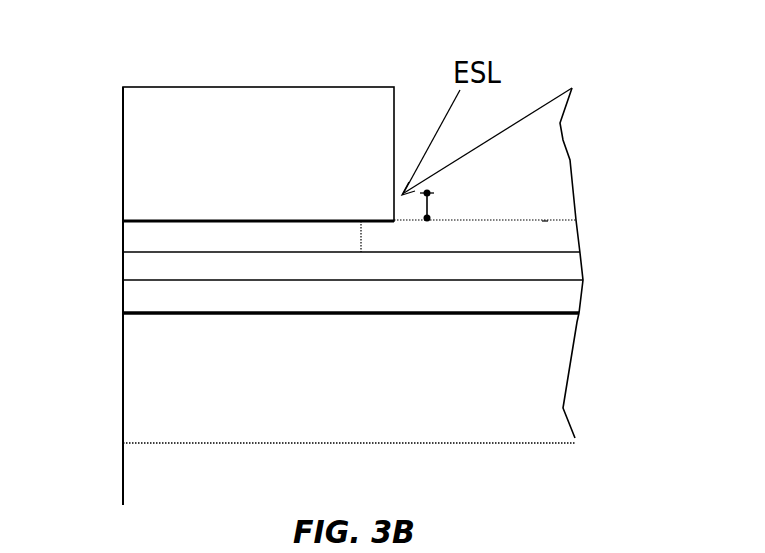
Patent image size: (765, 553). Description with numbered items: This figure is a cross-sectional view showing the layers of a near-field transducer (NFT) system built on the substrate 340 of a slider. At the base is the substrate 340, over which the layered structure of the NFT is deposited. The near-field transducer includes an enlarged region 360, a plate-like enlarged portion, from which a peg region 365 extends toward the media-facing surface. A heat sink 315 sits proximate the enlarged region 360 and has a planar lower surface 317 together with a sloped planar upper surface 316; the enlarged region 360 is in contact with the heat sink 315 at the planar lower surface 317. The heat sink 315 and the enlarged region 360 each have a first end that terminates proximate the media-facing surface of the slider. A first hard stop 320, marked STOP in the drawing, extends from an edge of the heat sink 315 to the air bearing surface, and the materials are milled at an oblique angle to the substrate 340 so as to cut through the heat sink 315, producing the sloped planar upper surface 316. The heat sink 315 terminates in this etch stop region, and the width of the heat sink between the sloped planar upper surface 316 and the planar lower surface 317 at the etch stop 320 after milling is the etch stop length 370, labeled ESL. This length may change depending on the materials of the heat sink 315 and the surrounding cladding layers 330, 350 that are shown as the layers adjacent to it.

The first hard stop 320 is at (199, 92).
The sloped planar upper surface 316 is at (527, 112).
The heat sink 315 is at (562, 163).
The enlarged region 360 is at (567, 242).
The planar lower surface 317 is at (542, 221).
The cladding layer 350 is at (123, 240).
The peg region 365 is at (123, 268).
The cladding layer 330 is at (123, 300).
The substrate 340 is at (123, 398).
The etch stop length 370 is at (430, 208).